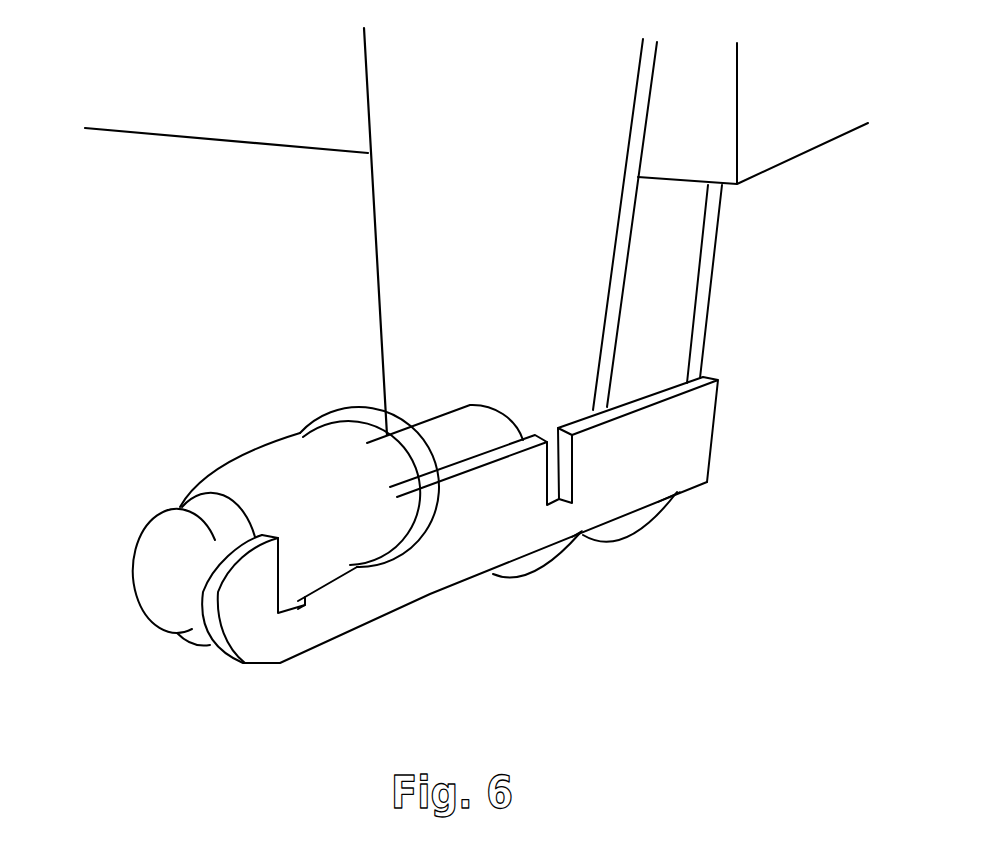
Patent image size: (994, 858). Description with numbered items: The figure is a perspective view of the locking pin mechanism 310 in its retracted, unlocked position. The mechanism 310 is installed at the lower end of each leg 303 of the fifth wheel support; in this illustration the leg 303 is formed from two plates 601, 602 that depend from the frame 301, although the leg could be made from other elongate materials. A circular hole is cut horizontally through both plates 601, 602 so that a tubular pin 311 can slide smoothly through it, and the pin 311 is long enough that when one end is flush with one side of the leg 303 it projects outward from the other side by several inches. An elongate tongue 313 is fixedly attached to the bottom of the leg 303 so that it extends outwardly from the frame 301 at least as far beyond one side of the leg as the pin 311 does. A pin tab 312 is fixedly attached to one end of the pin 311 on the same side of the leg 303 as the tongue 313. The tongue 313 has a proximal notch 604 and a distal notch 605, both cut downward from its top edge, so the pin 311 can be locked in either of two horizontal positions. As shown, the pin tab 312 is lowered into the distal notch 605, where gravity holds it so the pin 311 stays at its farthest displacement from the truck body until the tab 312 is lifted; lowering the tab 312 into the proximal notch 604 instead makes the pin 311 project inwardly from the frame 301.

The frame 301 is at (683, 145).
The leg 303 is at (460, 243).
The locking pin mechanism 310 is at (487, 542).
The tubular pin 311 is at (408, 450).
The pin tab 312 is at (333, 518).
The elongate tongue 313 is at (522, 528).
The plate 601 is at (700, 323).
The plate 602 is at (723, 224).
The proximal notch 604 is at (563, 472).
The distal notch 605 is at (307, 608).